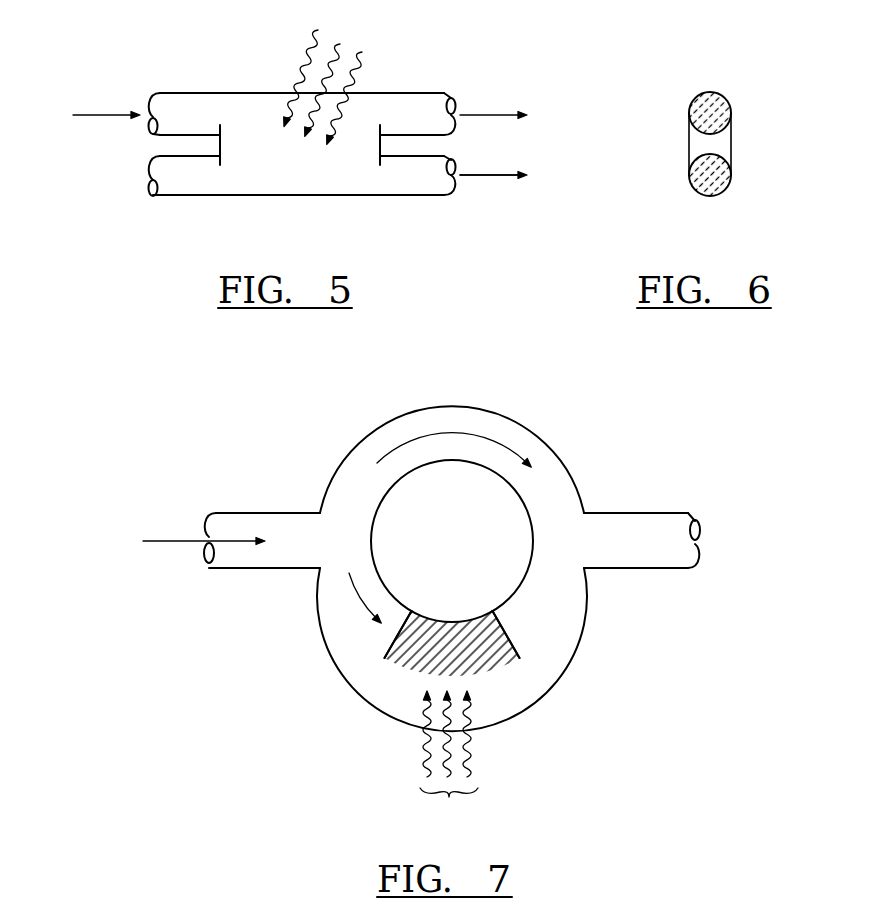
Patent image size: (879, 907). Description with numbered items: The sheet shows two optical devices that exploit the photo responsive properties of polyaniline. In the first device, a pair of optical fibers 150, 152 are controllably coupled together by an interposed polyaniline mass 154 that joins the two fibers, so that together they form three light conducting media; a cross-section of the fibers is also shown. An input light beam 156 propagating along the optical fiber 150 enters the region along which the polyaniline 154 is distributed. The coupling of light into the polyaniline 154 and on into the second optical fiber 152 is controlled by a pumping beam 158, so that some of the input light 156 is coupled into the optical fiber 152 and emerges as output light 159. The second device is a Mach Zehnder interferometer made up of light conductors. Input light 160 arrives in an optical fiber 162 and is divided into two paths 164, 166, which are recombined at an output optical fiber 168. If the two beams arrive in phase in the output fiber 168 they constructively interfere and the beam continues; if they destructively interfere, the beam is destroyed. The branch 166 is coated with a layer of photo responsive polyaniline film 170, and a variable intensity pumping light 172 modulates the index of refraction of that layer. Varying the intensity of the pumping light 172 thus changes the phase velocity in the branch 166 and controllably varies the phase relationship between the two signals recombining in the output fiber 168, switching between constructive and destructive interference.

In FIG. 5, the optical fiber 150 is at (422, 107).
In FIG. 5, the optical fiber 152 is at (410, 182).
In FIG. 5, the polyaniline mass 154 is at (352, 137).
In FIG. 5, the input light beam 156 is at (98, 115).
In FIG. 5, the pumping beam 158 is at (330, 75).
In FIG. 5, the output light 159 is at (483, 180).
In FIG. 7, the input light 160 is at (177, 541).
In FIG. 7, the optical fiber 162 is at (295, 548).
In FIG. 7, the path 164 is at (482, 420).
In FIG. 7, the branch 166 is at (368, 632).
In FIG. 7, the output optical fiber 168 is at (620, 528).
In FIG. 7, the photo responsive polyaniline film 170 is at (480, 658).
In FIG. 7, the variable intensity pumping light 172 is at (449, 762).